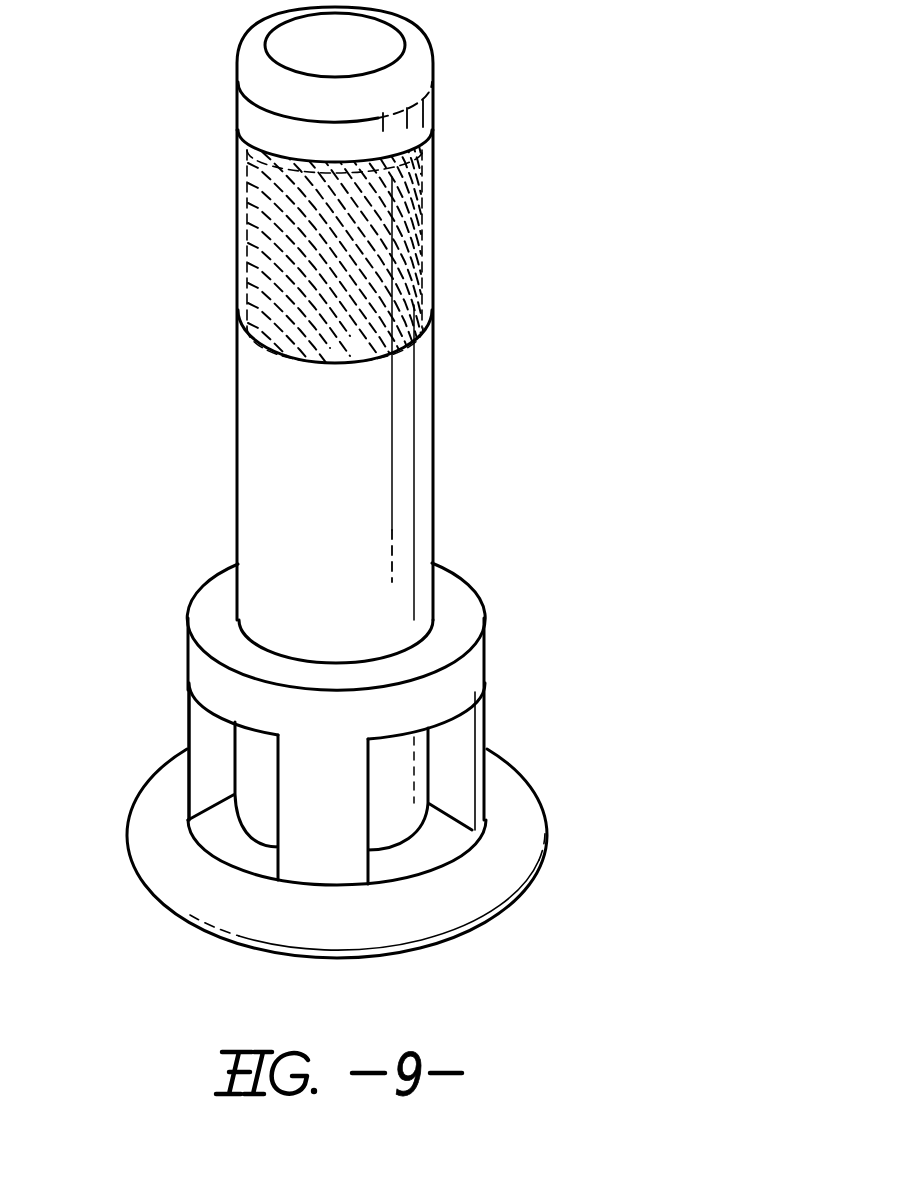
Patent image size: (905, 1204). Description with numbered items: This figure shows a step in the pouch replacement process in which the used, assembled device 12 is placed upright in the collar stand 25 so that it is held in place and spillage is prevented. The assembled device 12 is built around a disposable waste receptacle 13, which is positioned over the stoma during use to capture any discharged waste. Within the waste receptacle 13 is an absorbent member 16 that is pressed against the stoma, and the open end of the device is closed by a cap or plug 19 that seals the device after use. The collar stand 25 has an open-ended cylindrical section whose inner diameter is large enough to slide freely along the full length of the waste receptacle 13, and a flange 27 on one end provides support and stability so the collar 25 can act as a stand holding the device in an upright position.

The assembled device 12 is at (146, 90).
The disposable waste receptacle 13 is at (368, 460).
The absorbent member 16 is at (355, 246).
The cap or plug 19 is at (413, 63).
The collar stand 25 is at (462, 670).
The flange 27 is at (490, 870).